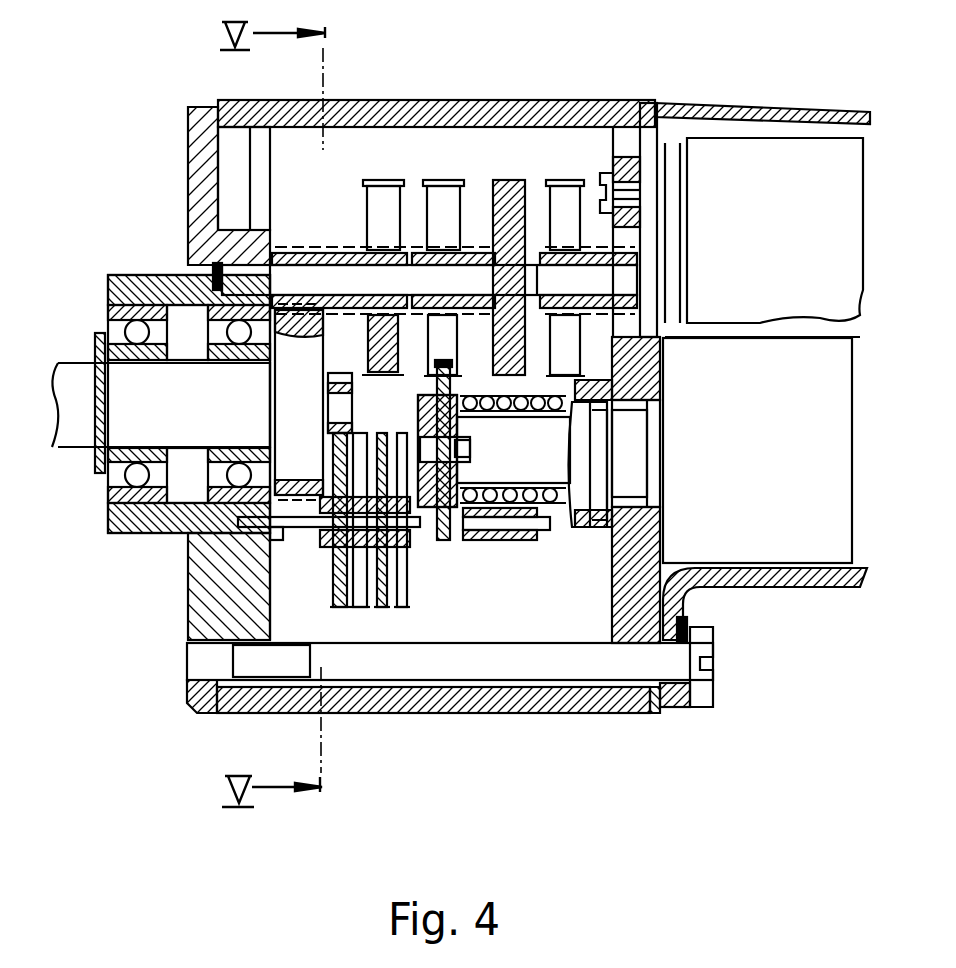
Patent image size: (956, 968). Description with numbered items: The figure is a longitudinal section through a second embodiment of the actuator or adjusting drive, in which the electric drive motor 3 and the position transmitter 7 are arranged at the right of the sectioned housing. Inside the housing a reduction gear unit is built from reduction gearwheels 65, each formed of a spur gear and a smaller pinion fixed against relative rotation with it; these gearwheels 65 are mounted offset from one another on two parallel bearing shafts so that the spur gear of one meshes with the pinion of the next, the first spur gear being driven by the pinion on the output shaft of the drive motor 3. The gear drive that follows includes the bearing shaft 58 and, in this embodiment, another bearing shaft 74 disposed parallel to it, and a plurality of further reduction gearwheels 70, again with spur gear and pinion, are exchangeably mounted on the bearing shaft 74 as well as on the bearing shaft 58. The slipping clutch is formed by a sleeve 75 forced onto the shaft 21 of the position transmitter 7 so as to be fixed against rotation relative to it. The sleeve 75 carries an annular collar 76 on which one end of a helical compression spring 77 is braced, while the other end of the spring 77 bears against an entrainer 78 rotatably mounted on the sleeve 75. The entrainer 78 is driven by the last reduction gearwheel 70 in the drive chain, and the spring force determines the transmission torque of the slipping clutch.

The electric drive motor 3 is at (743, 160).
The position transmitter 7 is at (779, 536).
The shaft of the position transmitter 21 is at (537, 457).
The bearing shaft 58 is at (287, 522).
The reduction gearwheels 65 is at (508, 180).
The reduction gearwheels 70 is at (337, 620).
The bearing shaft 74 is at (493, 500).
The sleeve 75 is at (527, 507).
The annular collar 76 is at (587, 382).
The helical compression spring 77 is at (487, 515).
The entrainer 78 is at (460, 393).